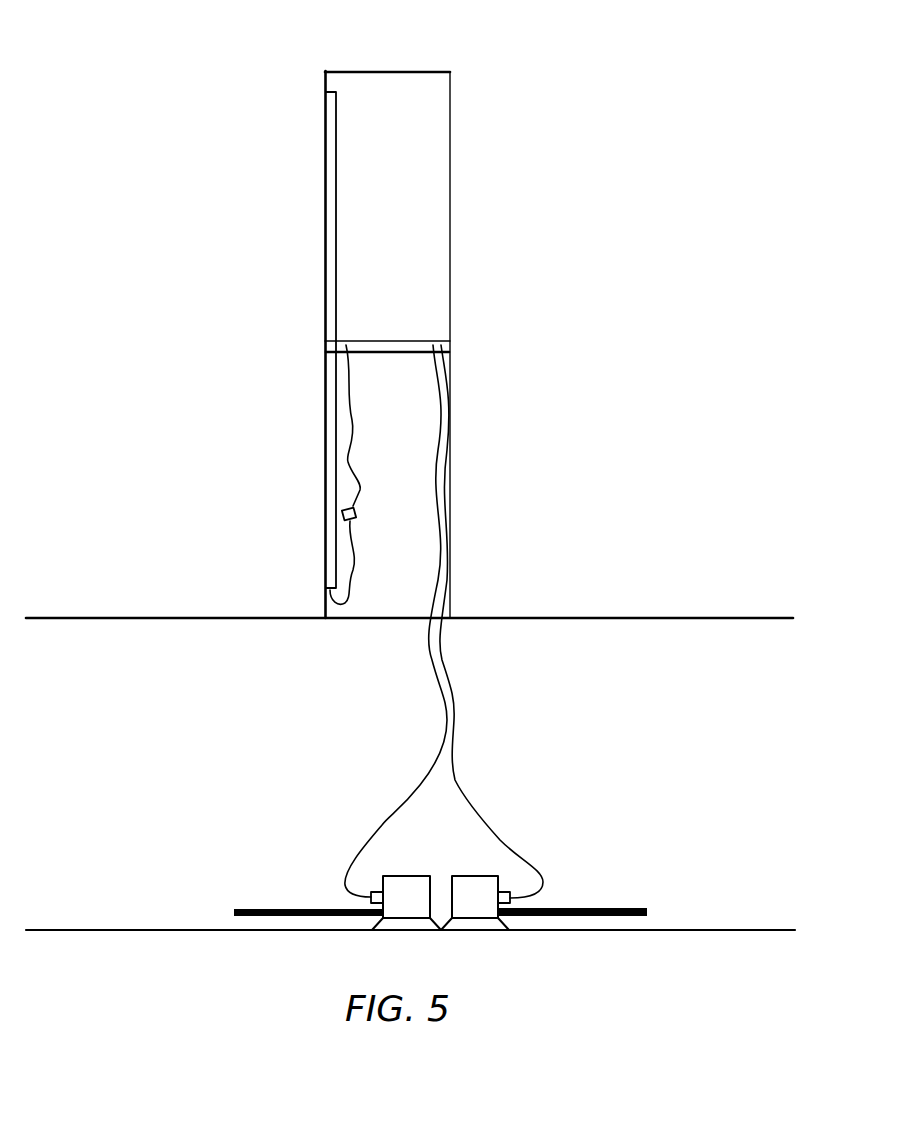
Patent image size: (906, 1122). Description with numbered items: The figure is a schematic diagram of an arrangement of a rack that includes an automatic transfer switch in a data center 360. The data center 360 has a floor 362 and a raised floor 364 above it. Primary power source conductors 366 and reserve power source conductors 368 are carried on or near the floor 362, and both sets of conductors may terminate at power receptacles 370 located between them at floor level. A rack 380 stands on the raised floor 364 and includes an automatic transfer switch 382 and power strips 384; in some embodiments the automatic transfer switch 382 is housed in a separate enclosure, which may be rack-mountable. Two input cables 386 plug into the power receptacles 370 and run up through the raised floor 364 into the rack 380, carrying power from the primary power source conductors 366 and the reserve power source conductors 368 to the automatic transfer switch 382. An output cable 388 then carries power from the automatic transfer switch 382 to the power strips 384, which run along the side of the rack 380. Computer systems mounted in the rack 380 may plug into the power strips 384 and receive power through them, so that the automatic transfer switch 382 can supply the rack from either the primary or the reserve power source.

The data center 360 is at (236, 68).
The floor 362 is at (736, 929).
The raised floor 364 is at (660, 617).
The primary power source conductors 366 is at (258, 908).
The reserve power source conductors 368 is at (593, 908).
The power receptacles 370 is at (452, 876).
The rack 380 is at (450, 72).
The automatic transfer switch 382 is at (388, 340).
The power strips 384 is at (336, 160).
The input cables 386 is at (478, 702).
The output cable 388 is at (349, 452).